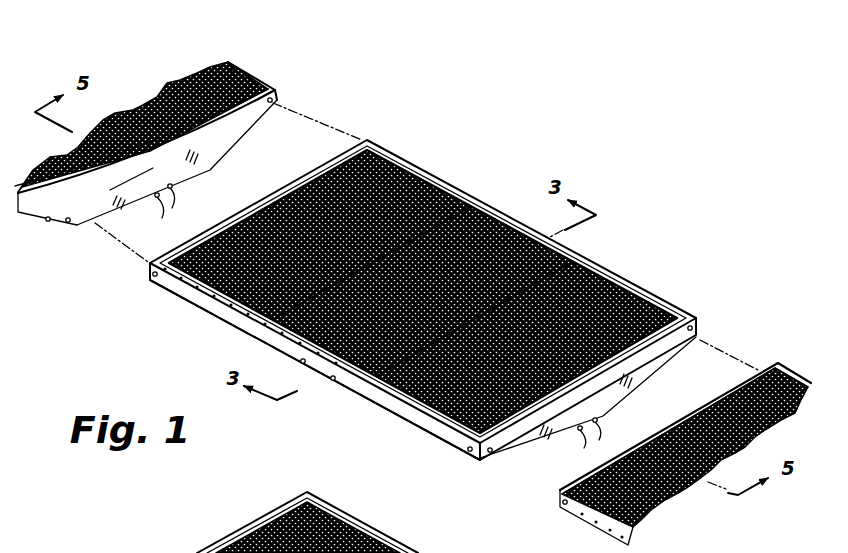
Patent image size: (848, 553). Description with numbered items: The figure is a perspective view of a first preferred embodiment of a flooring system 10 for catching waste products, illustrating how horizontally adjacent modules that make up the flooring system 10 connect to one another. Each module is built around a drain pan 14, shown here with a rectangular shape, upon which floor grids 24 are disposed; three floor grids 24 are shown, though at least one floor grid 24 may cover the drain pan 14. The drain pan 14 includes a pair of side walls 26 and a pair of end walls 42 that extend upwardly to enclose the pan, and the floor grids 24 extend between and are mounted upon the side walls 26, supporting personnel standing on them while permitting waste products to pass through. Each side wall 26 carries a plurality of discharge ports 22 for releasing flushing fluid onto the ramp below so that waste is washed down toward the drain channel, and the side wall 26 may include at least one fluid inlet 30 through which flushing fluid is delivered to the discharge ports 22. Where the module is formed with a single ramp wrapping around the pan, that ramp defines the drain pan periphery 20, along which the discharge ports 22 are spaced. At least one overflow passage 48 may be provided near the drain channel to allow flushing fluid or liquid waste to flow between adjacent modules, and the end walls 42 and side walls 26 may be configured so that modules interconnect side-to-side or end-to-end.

The flooring system 10 is at (413, 278).
The drain pan 14 is at (413, 278).
The drain pan periphery 20 is at (413, 294).
The discharge ports 22 is at (363, 393).
The floor grid 24 is at (483, 207).
The side wall 26 is at (570, 535).
The fluid inlet 30 is at (274, 97).
The end wall 42 is at (317, 170).
The overflow passage 48 is at (372, 329).